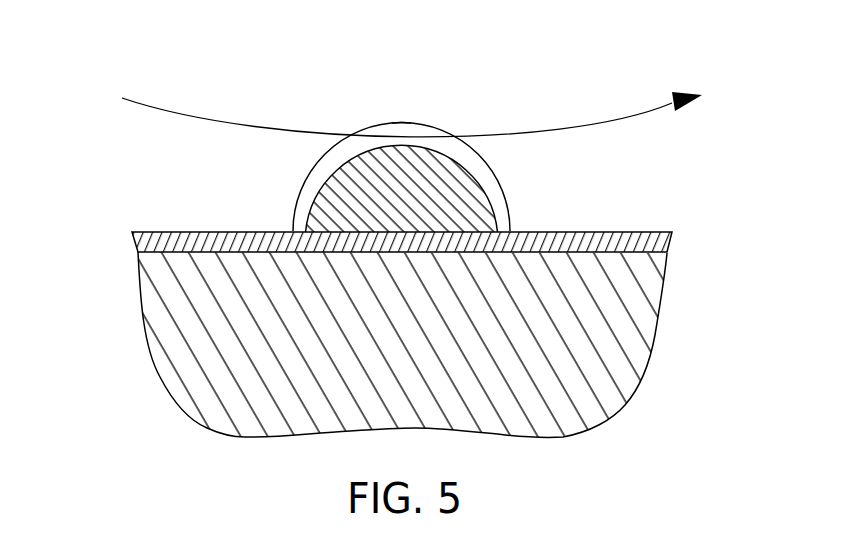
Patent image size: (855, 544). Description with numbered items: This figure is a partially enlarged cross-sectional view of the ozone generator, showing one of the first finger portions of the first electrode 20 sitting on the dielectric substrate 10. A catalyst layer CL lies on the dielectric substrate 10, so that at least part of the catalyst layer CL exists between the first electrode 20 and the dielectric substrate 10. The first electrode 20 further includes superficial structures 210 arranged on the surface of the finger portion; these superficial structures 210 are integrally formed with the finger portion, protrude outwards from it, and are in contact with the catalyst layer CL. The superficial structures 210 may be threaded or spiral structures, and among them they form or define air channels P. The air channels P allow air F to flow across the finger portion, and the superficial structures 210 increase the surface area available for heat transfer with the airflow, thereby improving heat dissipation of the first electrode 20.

The dielectric substrate 10 is at (178, 313).
The catalyst layer CL is at (188, 231).
The first electrode 20 is at (457, 149).
The superficial structures 210 is at (378, 123).
The air channels P is at (412, 118).
The air F is at (180, 113).